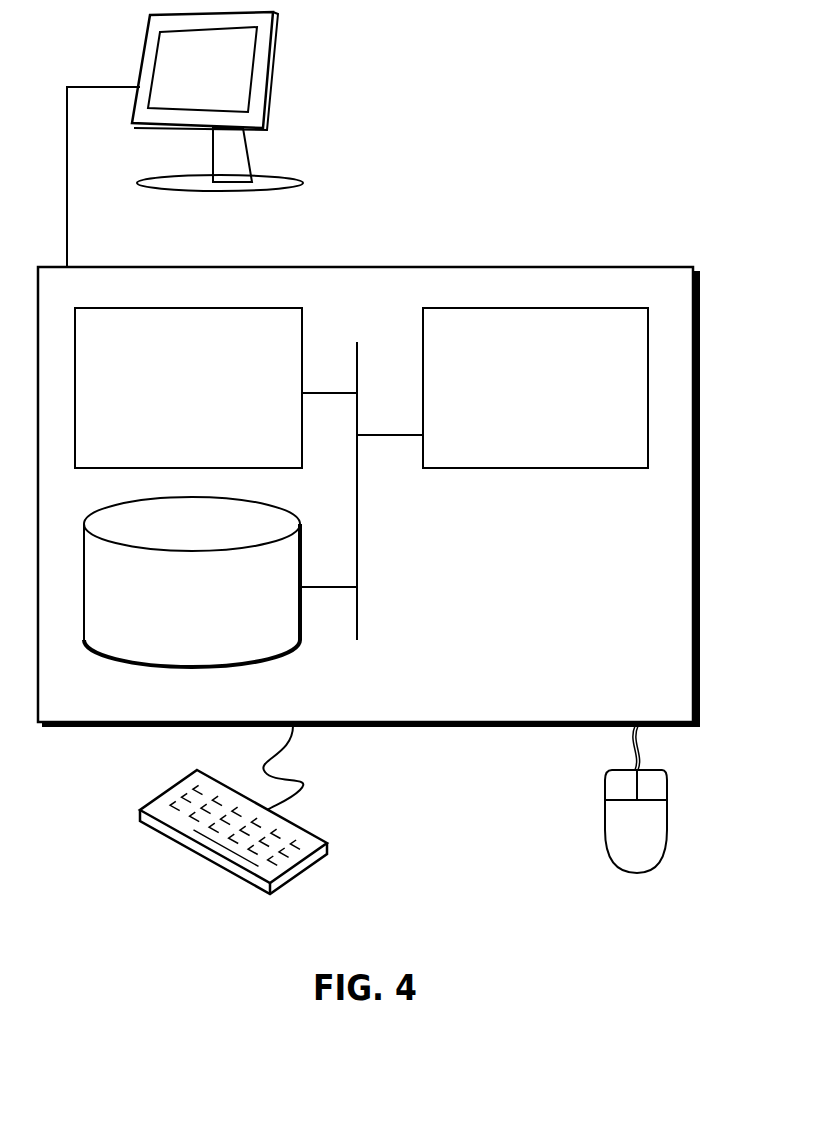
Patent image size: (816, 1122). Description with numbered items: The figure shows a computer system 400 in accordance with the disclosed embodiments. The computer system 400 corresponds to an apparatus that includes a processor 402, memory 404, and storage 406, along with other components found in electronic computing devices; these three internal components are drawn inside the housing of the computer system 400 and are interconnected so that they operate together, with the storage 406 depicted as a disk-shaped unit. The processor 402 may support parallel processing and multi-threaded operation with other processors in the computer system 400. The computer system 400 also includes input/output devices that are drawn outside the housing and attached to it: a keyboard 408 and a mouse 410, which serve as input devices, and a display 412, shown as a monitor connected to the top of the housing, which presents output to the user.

The computer system 400 is at (412, 245).
The processor 402 is at (518, 402).
The memory 404 is at (168, 400).
The storage 406 is at (175, 612).
The keyboard 408 is at (157, 832).
The mouse 410 is at (617, 842).
The display 412 is at (185, 139).